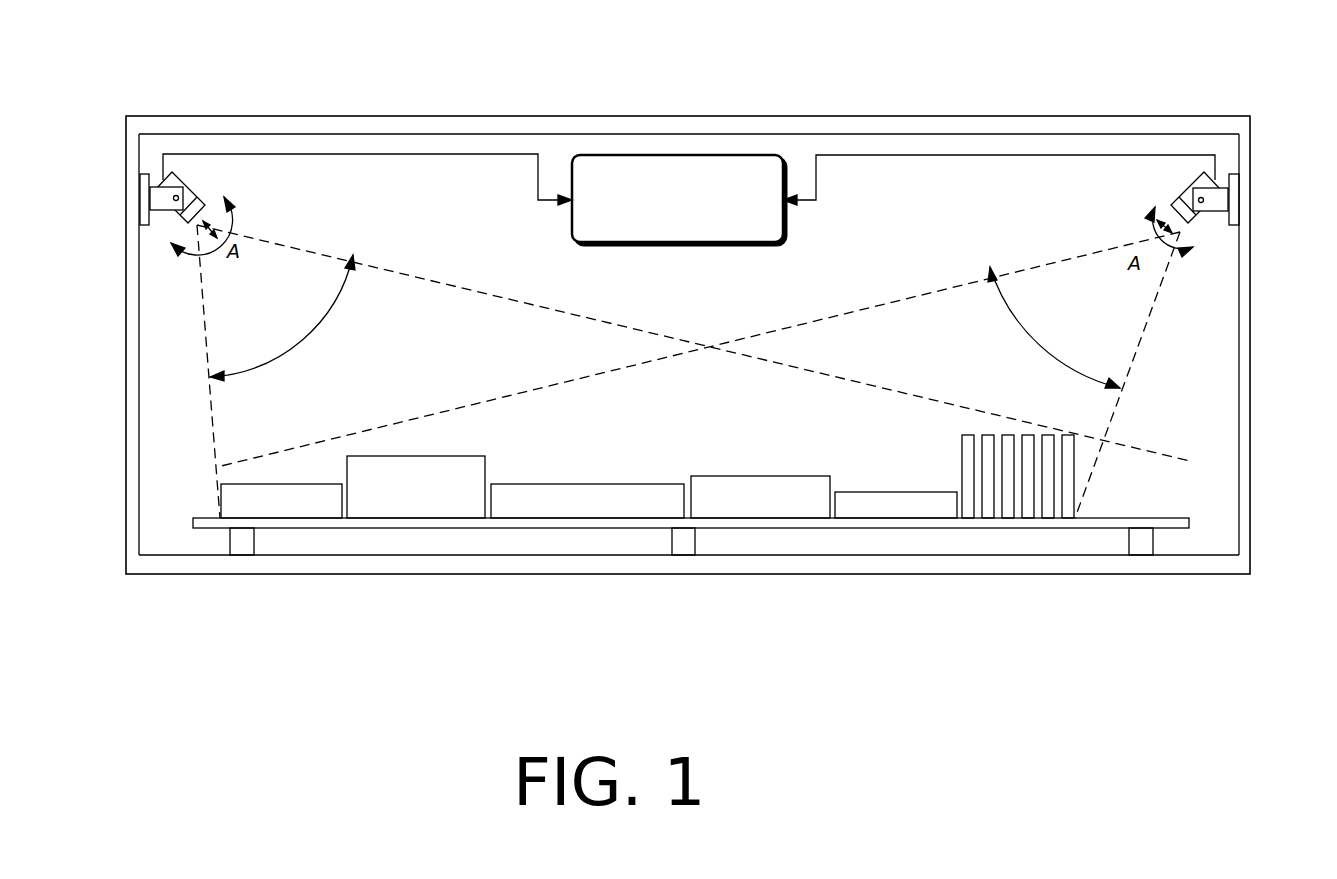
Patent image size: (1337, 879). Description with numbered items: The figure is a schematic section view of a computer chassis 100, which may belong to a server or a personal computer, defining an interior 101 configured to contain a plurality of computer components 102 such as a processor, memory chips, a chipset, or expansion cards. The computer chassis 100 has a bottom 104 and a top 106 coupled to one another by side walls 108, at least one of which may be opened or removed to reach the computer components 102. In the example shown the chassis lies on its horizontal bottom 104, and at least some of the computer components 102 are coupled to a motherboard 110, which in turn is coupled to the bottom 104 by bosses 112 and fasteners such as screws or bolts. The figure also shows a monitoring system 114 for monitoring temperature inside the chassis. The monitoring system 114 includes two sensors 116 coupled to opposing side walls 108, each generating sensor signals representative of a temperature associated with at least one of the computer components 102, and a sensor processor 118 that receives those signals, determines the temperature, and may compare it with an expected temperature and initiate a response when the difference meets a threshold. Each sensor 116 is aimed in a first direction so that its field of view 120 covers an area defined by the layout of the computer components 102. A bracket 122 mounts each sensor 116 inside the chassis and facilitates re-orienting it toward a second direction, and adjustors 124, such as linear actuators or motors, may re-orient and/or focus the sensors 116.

The computer chassis 100 is at (987, 88).
The interior 101 is at (955, 193).
The computer components 102 is at (1075, 425).
The bottom 104 is at (575, 576).
The top 106 is at (905, 115).
The side walls 108 is at (126, 363).
The motherboard 110 is at (250, 518).
The bosses 112 is at (240, 541).
The monitoring system 114 is at (270, 200).
The sensors 116 is at (195, 204).
The sensor processor 118 is at (655, 237).
The field of view 120 is at (693, 371).
The bracket 122 is at (167, 197).
The adjustors 124 is at (148, 198).